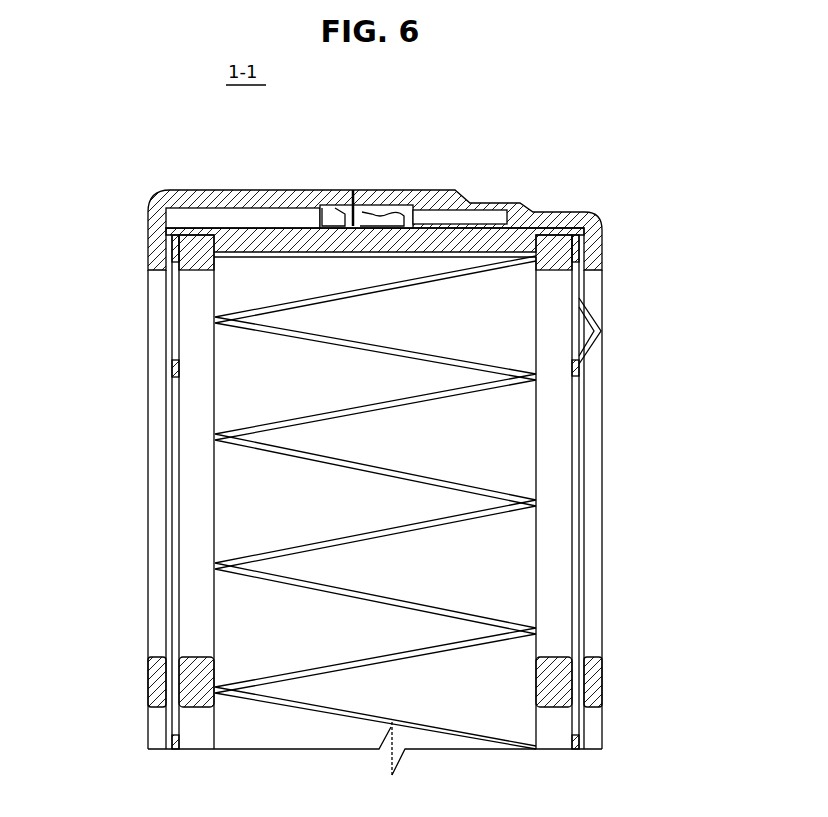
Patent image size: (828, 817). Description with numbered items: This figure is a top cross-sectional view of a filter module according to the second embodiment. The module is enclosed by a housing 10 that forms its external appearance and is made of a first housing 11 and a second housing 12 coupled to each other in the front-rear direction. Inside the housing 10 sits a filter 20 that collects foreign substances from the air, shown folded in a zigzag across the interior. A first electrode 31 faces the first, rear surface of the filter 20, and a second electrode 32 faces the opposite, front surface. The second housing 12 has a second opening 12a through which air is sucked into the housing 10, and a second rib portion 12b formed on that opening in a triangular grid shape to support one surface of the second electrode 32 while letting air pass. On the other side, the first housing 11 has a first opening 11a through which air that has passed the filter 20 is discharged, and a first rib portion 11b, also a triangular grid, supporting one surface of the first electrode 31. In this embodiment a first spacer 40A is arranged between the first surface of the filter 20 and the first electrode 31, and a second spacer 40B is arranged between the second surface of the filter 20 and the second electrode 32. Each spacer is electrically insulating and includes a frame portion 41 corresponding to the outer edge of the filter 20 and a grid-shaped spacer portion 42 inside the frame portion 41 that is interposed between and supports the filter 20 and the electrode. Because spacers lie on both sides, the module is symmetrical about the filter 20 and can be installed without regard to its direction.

The housing 10 is at (418, 128).
The first housing 11 is at (413, 190).
The first opening 11a is at (592, 436).
The first rib portion 11b is at (596, 686).
The second housing 12 is at (316, 190).
The second opening 12a is at (158, 334).
The second rib portion 12b is at (160, 686).
The filter 20 is at (208, 434).
The first electrode 31 is at (588, 484).
The second electrode 32 is at (163, 484).
The first spacer 40A is at (586, 572).
The second spacer 40B is at (172, 556).
The frame portion 41 is at (192, 244).
The spacer portion 42 is at (196, 657).